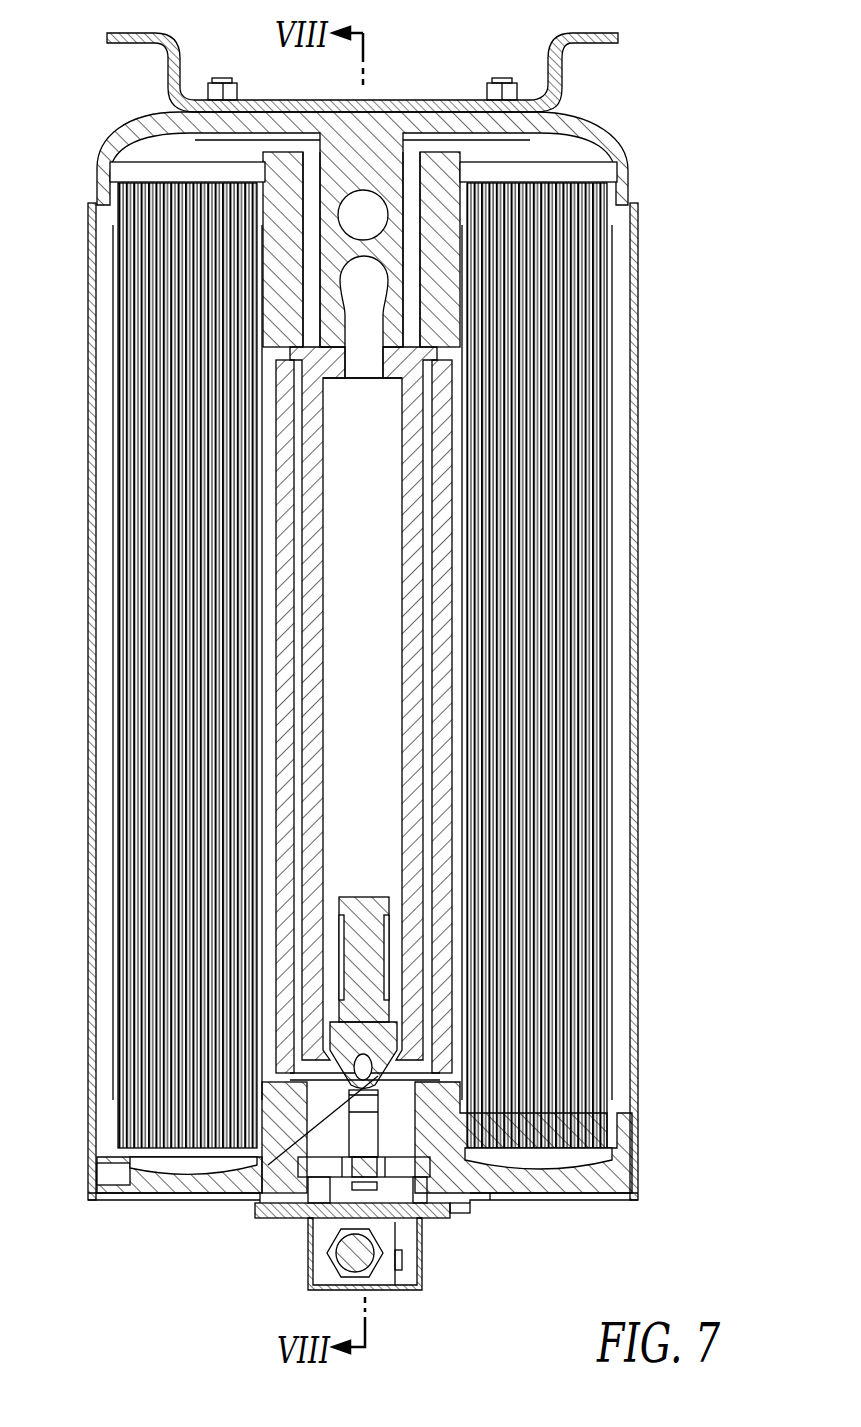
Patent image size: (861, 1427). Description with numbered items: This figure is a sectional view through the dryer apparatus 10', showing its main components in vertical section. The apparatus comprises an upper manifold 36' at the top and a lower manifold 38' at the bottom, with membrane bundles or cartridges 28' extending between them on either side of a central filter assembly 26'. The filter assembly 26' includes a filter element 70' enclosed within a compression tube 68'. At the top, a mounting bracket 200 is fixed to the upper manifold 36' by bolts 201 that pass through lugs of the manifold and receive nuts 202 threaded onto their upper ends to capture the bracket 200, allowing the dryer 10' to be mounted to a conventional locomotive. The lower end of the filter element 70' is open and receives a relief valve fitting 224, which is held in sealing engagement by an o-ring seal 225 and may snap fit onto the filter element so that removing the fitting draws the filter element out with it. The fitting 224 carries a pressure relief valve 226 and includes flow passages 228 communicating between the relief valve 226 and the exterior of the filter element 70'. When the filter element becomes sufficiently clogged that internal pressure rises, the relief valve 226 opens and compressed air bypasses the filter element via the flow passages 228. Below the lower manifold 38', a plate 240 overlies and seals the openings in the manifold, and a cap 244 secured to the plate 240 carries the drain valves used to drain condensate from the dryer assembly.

The dryer apparatus 10' is at (429, 690).
The upper manifold 36' is at (381, 241).
The lower manifold 38' is at (400, 1165).
The membrane bundles 28' is at (367, 655).
The compression tube 68' is at (364, 720).
The filter element 70' is at (397, 703).
The filter assembly 26' is at (350, 703).
The mounting bracket 200 is at (563, 76).
The bolts 201 is at (222, 78).
The nuts 202 is at (240, 92).
The relief valve fitting 224 is at (392, 1050).
The o-ring seal 225 is at (330, 1068).
The pressure relief valve 226 is at (365, 897).
The flow passages 228 is at (470, 1213).
The plate 240 is at (426, 1220).
The cap 244 is at (308, 1266).